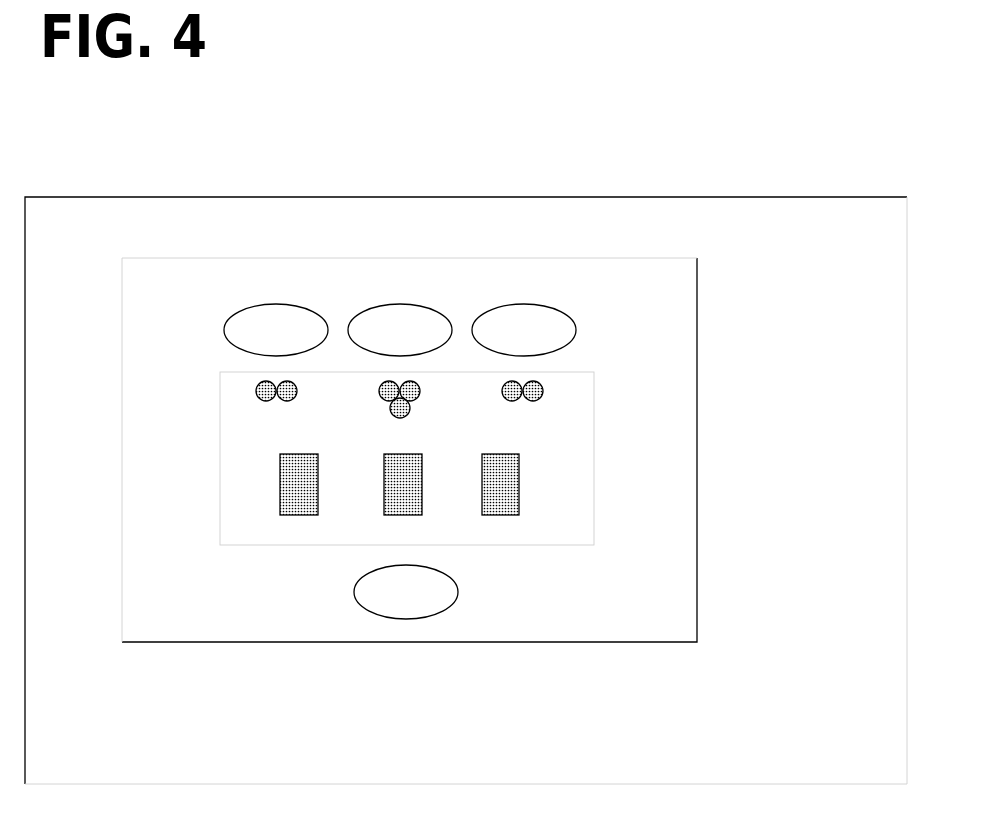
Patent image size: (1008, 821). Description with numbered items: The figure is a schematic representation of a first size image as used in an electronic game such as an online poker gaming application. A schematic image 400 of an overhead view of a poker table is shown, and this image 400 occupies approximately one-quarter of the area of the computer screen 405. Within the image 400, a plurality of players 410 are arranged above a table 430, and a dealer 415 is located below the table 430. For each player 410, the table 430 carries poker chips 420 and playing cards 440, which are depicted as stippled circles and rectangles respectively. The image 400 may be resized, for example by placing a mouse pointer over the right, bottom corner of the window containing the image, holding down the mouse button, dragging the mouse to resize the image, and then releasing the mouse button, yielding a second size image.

The image 400 is at (409, 450).
The computer screen 405 is at (466, 490).
The players 410 is at (523, 330).
The dealer 415 is at (458, 590).
The poker chips 420 is at (256, 390).
The table 430 is at (407, 458).
The playing cards 440 is at (280, 466).